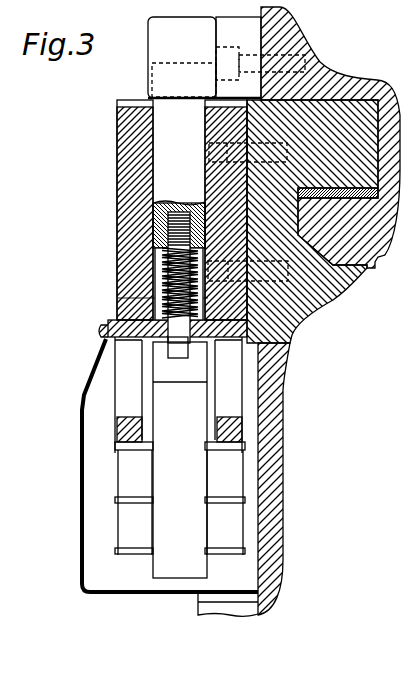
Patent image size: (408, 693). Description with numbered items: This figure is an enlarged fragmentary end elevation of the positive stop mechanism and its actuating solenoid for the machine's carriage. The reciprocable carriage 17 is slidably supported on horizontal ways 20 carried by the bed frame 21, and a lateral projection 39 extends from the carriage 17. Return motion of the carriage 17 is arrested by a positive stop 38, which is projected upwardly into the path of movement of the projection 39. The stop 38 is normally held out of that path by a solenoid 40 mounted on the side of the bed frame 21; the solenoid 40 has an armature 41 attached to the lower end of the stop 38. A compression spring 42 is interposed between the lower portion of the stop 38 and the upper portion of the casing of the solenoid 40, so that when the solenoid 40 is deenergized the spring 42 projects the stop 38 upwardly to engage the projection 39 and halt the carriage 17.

The reciprocable carriage 17 is at (318, 71).
The horizontal ways 20 is at (335, 108).
The bed frame 21 is at (272, 428).
The positive stop 38 is at (150, 76).
The lateral projection 39 is at (158, 50).
The solenoid 40 is at (127, 513).
The armature 41 is at (163, 391).
The compression spring 42 is at (160, 282).